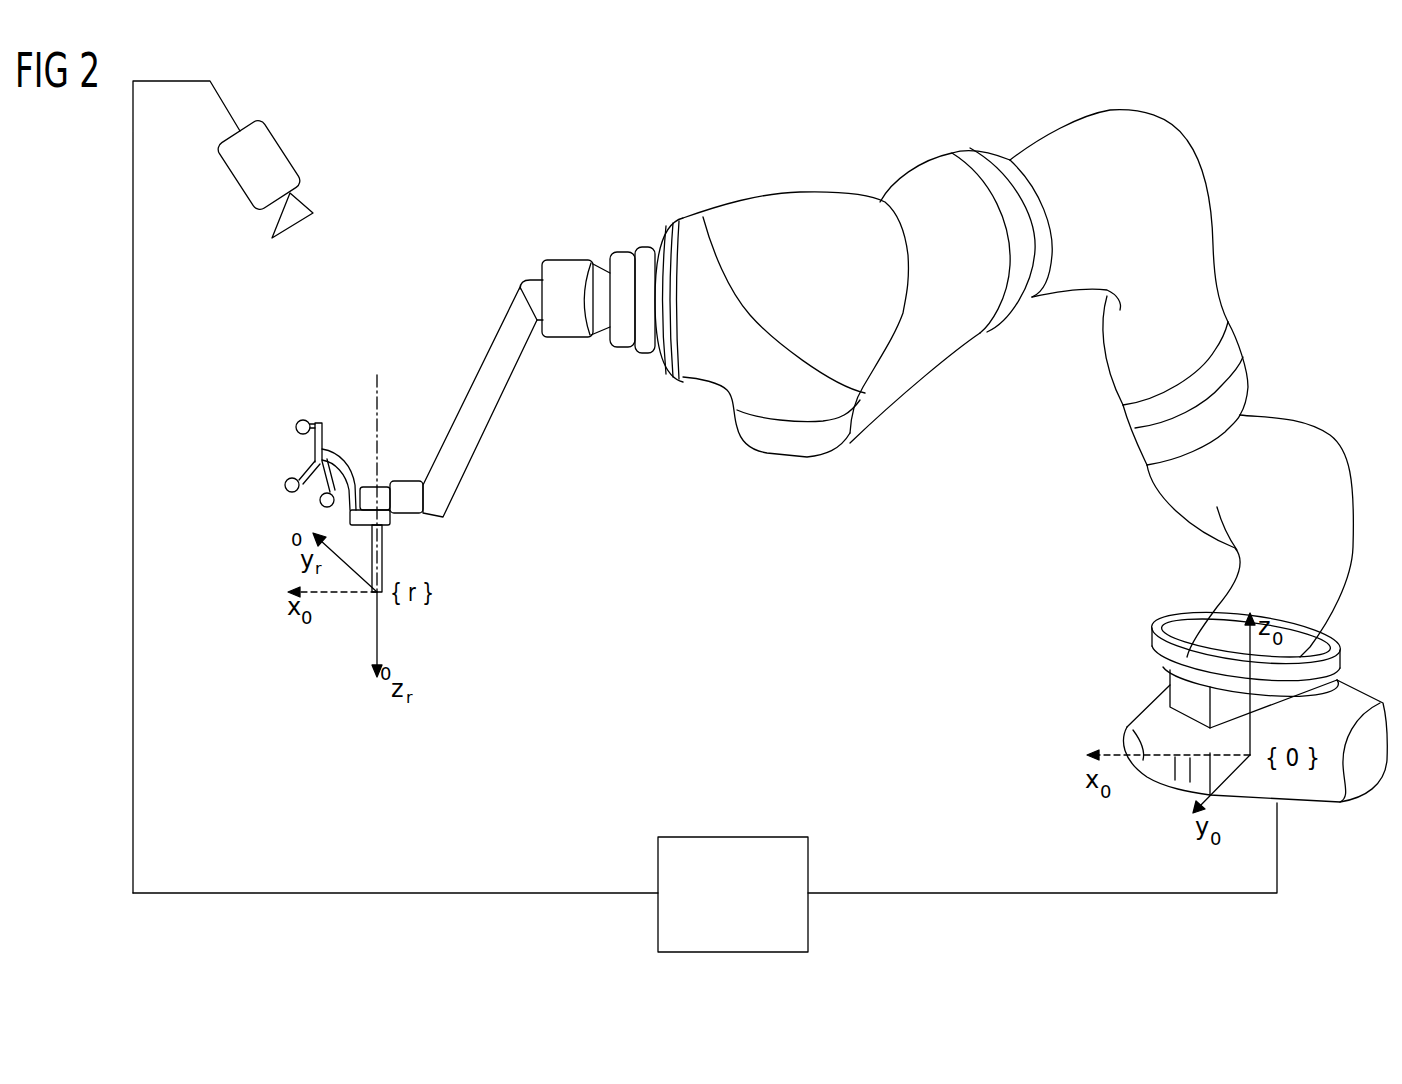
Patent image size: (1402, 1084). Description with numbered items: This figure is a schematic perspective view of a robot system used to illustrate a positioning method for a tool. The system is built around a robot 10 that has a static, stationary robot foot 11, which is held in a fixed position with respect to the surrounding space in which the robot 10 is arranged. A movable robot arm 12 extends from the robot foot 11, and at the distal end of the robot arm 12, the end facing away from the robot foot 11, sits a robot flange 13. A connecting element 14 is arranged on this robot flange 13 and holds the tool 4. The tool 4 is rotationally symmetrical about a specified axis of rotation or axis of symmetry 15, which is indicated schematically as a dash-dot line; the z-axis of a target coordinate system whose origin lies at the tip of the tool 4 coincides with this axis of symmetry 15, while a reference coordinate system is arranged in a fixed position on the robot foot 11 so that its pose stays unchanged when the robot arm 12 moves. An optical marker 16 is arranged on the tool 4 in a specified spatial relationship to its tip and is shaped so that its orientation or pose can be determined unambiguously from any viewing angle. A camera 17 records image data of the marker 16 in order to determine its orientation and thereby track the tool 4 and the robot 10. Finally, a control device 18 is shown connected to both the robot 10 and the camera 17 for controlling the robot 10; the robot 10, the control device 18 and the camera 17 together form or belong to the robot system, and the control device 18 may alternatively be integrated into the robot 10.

The tool 4 is at (384, 562).
The robot 10 is at (1033, 383).
The robot foot 11 is at (1313, 790).
The robot arm 12 is at (1323, 430).
The robot flange 13 is at (670, 227).
The connecting element 14 is at (478, 386).
The axis of symmetry 15 is at (375, 388).
The optical marker 16 is at (313, 463).
The camera 17 is at (292, 150).
The control device 18 is at (731, 837).